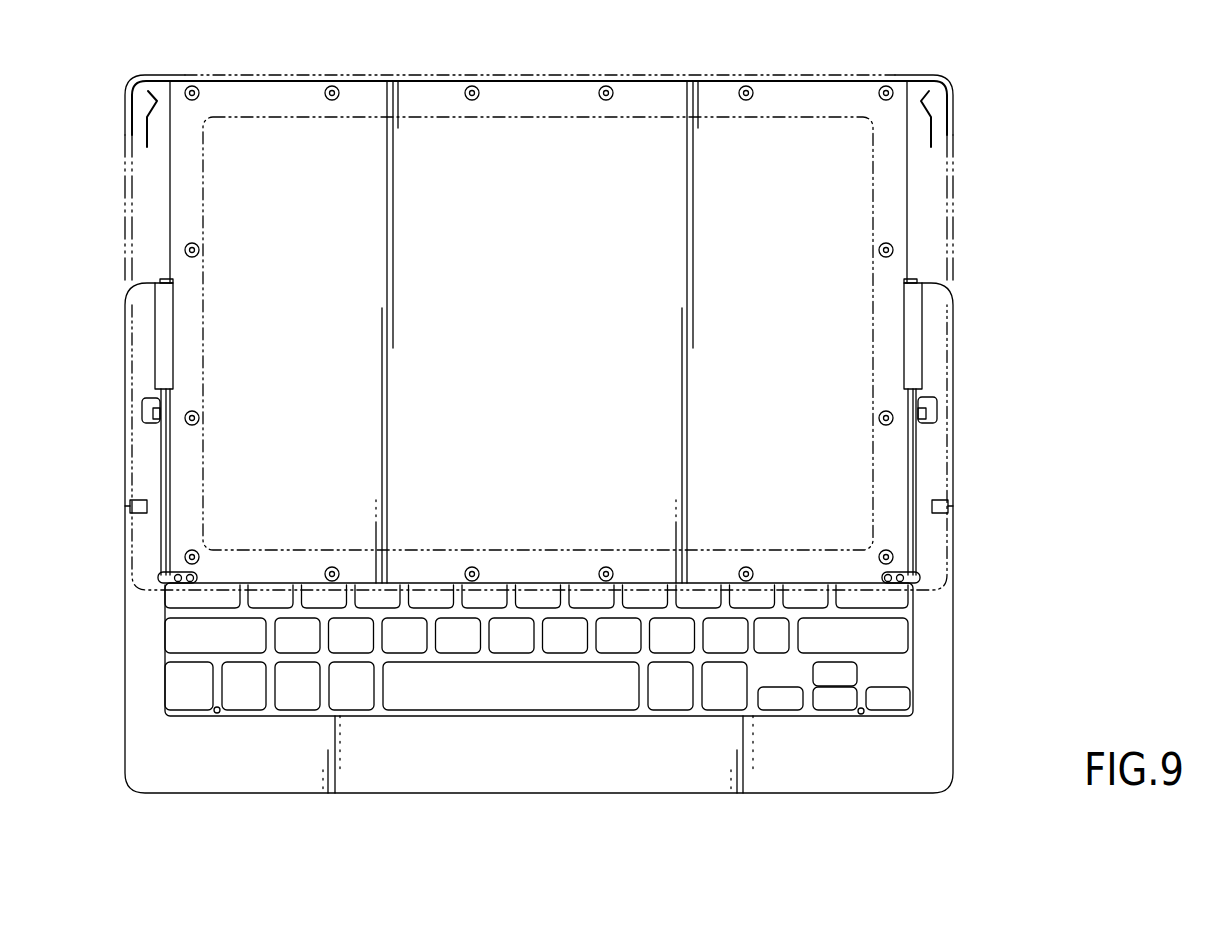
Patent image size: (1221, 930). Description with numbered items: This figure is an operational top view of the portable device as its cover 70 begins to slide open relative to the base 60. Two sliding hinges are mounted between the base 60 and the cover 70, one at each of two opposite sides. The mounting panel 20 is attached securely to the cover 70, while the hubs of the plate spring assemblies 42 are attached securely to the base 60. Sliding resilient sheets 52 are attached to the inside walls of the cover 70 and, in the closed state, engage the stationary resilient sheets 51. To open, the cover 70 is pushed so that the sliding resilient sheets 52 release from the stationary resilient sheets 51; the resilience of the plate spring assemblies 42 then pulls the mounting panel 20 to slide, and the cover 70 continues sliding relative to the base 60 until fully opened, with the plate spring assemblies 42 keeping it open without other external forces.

The mounting panel 20 is at (850, 208).
The plate spring assembly 42 is at (162, 439).
The stationary resilient sheet 51 is at (153, 290).
The sliding resilient sheet 52 is at (147, 132).
The base 60 is at (943, 737).
The cover 70 is at (805, 76).